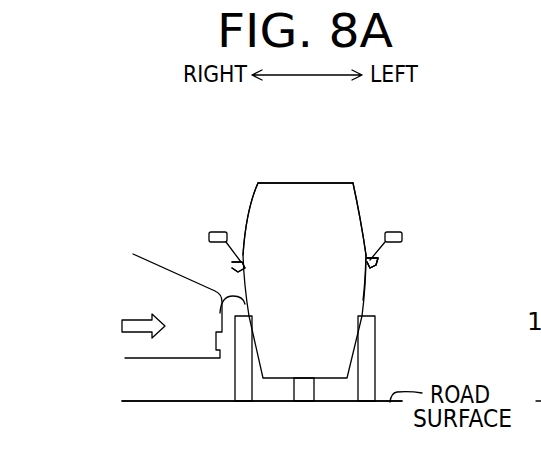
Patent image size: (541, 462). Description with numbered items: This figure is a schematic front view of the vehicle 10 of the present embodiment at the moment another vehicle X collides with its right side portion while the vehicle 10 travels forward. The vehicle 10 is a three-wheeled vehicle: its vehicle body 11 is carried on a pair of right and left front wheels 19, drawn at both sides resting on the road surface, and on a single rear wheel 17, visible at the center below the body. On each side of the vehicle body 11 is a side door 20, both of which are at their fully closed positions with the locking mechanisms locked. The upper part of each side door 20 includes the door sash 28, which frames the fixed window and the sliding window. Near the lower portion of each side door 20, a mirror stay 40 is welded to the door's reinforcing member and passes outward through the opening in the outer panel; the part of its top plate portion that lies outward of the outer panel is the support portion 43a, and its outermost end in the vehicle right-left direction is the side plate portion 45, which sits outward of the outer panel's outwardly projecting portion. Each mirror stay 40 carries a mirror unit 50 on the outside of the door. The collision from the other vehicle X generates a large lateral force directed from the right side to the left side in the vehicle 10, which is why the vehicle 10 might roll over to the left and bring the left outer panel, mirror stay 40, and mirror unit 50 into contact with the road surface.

The vehicle 10 is at (232, 182).
The vehicle body 11 is at (304, 183).
The door sash 28 is at (249, 190).
The support portion 43a is at (367, 255).
The mirror stay 40 is at (232, 266).
The side plate portion 45 is at (378, 263).
The mirror unit 50 is at (210, 234).
The side door 20 is at (220, 310).
The another vehicle X is at (147, 353).
The front wheels 19 is at (242, 393).
The rear wheel 17 is at (305, 395).